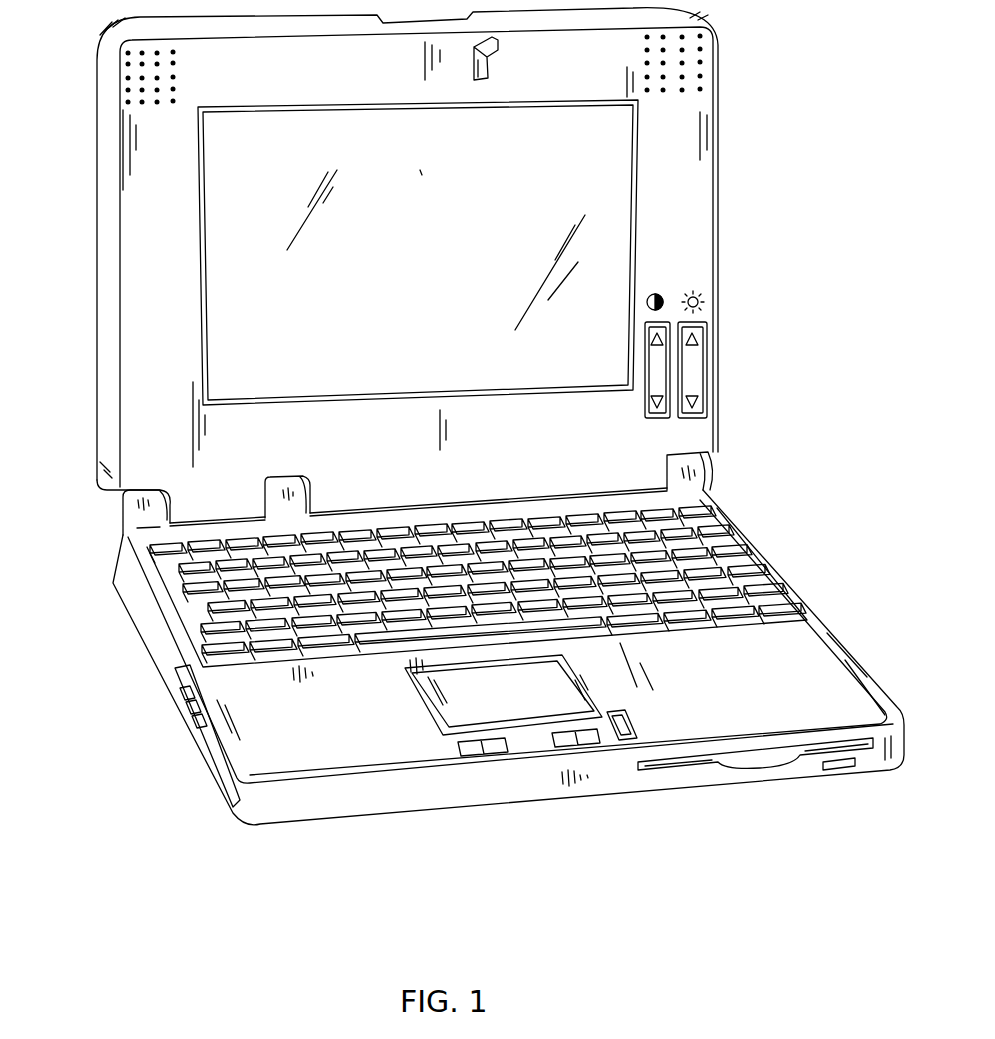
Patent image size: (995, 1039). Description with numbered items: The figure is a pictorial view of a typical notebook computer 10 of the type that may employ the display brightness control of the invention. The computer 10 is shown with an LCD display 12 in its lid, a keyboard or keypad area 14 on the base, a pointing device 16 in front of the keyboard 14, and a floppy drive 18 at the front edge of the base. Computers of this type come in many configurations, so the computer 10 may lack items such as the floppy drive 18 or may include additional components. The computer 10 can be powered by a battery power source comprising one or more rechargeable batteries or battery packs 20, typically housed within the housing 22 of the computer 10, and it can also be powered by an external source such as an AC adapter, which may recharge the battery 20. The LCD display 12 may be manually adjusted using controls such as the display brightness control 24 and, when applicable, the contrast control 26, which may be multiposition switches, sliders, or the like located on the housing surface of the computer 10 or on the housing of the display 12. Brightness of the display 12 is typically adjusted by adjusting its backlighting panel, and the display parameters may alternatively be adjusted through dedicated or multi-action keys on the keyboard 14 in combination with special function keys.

The notebook computer 10 is at (474, 461).
The LCD display 12 is at (618, 181).
The keyboard 14 is at (688, 568).
The pointing device 16 is at (447, 705).
The floppy drive 18 is at (743, 763).
The battery pack 20 is at (220, 773).
The housing 22 is at (300, 805).
The display brightness control 24 is at (695, 372).
The contrast control 26 is at (658, 410).